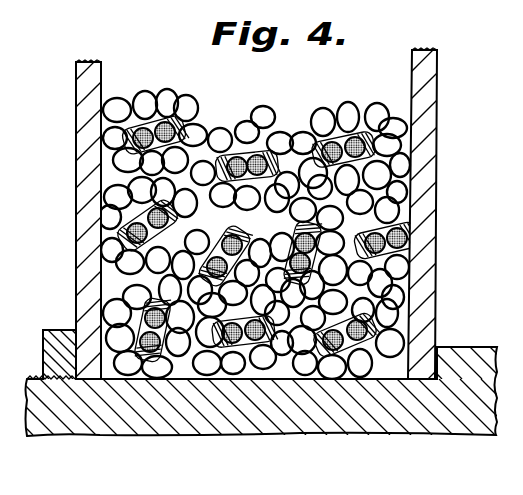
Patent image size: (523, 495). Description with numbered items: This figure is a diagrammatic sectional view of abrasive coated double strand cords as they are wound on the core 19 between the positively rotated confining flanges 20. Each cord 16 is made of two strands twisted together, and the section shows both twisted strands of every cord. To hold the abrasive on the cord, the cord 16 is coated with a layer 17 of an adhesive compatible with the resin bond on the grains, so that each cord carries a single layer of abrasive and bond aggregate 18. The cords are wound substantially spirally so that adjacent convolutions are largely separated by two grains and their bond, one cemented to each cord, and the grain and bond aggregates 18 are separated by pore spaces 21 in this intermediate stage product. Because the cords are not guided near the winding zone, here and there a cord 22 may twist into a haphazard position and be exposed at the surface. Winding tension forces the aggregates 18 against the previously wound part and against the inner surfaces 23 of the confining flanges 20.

The cord 16 is at (325, 135).
The layer of adhesive 17 is at (372, 145).
The abrasive and bond aggregate 18 is at (135, 93).
The core 19 is at (393, 379).
The confining flanges 20 is at (80, 78).
The pore spaces 21 is at (295, 178).
The exposed cord 22 is at (400, 234).
The inner surfaces 23 is at (100, 78).